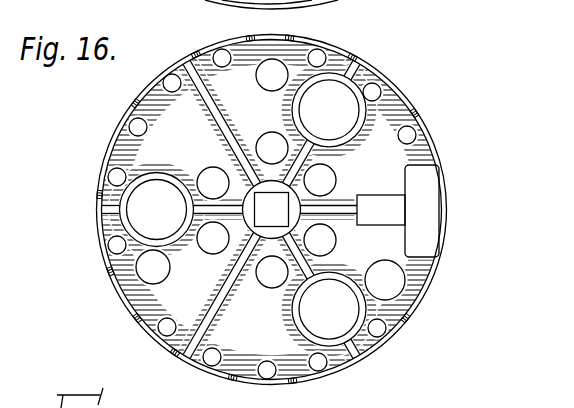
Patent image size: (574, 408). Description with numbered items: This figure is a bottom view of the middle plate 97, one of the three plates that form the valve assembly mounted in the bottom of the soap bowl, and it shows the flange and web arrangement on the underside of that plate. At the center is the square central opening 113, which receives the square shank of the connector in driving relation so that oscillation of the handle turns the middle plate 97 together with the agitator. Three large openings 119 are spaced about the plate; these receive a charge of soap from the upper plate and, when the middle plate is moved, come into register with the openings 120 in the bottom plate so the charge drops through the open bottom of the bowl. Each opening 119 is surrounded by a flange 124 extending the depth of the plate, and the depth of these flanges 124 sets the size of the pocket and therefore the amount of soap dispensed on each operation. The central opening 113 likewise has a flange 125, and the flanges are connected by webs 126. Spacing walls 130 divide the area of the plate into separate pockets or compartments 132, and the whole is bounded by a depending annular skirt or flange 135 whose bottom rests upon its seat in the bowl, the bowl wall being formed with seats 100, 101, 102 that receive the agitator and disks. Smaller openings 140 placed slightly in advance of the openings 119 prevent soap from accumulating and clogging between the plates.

The middle plate 97 is at (413, 113).
The seat 100 is at (160, 284).
The seat 101 is at (268, 130).
The seat 102 is at (143, 134).
The central opening 113 is at (251, 183).
The opening 119 is at (128, 222).
The opening 120 is at (165, 175).
The flange 124 is at (355, 137).
The flange 125 is at (249, 223).
The web 126 is at (205, 212).
The spacing wall 130 is at (218, 105).
The pocket or compartment 132 is at (205, 62).
The depending annular skirt or flange 135 is at (403, 317).
The opening 140 is at (262, 80).